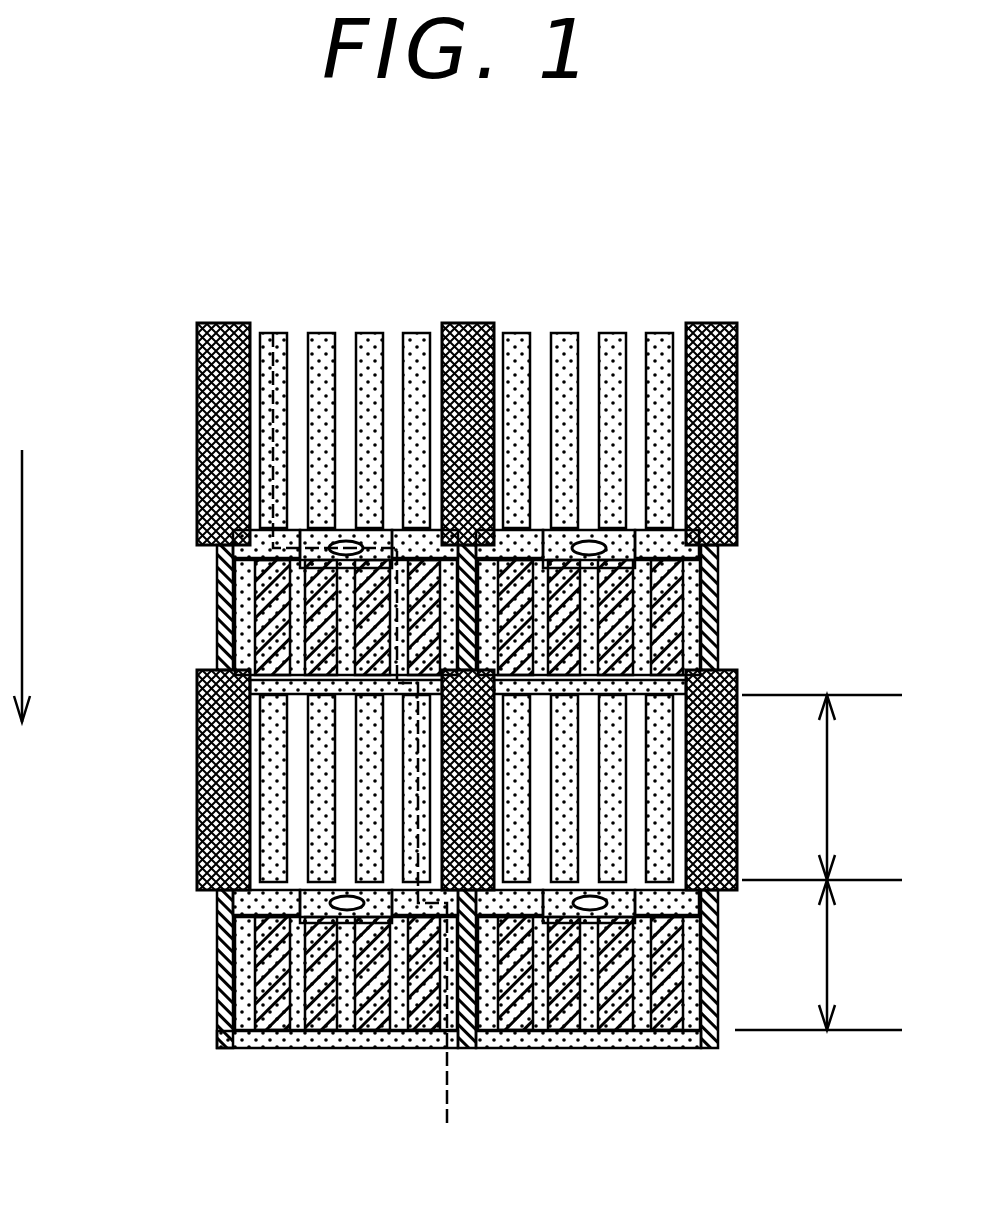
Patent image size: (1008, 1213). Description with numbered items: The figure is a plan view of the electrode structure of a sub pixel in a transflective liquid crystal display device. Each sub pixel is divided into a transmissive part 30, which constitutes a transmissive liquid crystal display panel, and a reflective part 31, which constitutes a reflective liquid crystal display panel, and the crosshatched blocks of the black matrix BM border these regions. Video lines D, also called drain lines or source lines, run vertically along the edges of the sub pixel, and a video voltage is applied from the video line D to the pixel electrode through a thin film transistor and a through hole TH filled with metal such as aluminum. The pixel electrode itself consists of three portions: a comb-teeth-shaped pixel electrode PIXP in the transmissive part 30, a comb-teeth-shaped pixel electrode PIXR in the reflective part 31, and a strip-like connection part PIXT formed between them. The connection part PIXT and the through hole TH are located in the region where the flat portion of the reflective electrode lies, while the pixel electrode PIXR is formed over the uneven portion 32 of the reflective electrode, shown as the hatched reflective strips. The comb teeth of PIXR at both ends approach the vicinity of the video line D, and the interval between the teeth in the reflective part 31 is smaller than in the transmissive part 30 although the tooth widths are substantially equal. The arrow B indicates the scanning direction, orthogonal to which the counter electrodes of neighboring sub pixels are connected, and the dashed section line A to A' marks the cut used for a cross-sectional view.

The black matrix BM is at (197, 410).
The pixel electrode in the transmissive part PIXP is at (618, 333).
The strip-like connection part PIXT is at (698, 560).
The pixel electrode in the reflective part PIXR is at (693, 628).
The through hole TH is at (346, 541).
The video line D is at (213, 617).
The section line A is at (354, 671).
The section line A' is at (457, 1157).
The scanning direction B is at (25, 617).
The transmissive part 30 is at (822, 787).
The reflective part 31 is at (818, 955).
The uneven portion 32 is at (613, 1048).